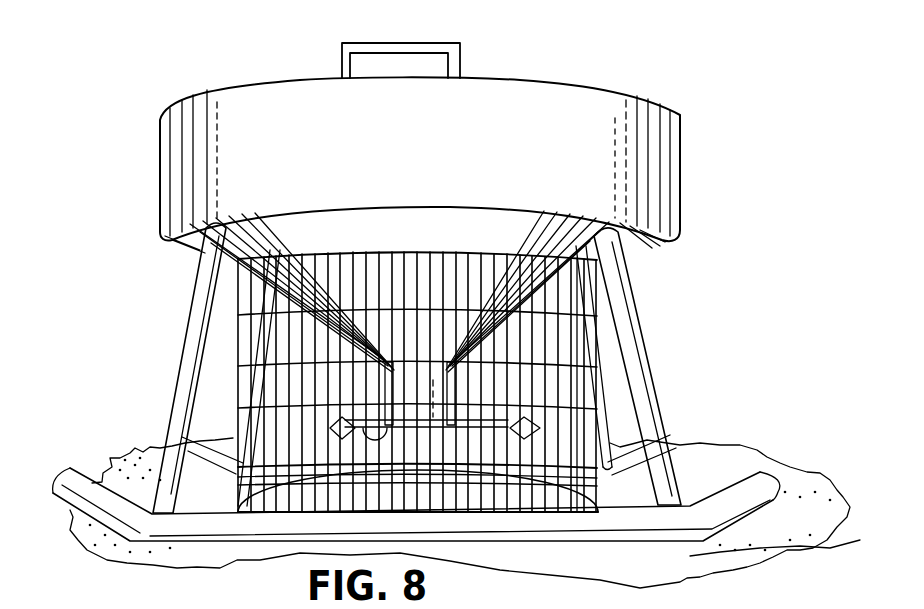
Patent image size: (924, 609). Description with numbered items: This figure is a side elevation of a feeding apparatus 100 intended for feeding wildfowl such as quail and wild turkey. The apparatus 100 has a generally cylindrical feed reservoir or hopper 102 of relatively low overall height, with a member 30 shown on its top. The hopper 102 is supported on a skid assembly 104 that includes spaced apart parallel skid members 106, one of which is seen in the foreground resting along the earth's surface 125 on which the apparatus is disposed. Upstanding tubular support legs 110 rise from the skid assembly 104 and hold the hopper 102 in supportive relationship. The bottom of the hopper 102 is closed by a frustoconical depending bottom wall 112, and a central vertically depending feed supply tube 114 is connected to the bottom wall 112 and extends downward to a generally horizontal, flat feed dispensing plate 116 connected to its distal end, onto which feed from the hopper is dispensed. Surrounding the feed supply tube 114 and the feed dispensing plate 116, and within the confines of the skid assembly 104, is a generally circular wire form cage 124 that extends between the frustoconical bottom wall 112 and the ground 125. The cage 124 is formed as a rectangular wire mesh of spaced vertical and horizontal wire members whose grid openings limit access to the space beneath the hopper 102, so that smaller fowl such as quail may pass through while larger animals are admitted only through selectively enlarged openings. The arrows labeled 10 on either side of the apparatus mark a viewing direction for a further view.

The section view indicator 10 is at (135, 392).
The handle 30 is at (420, 43).
The feeding apparatus 100 is at (416, 298).
The feed reservoir or hopper 102 is at (644, 119).
The skid assembly 104 is at (608, 546).
The skid members 106 is at (690, 503).
The tubular support legs 110 is at (250, 390).
The frustoconical bottom wall 112 is at (622, 254).
The feed supply tube 114 is at (494, 428).
The feed dispensing plate 116 is at (398, 443).
The wire form cage 124 is at (610, 349).
The earth's surface 125 is at (742, 537).